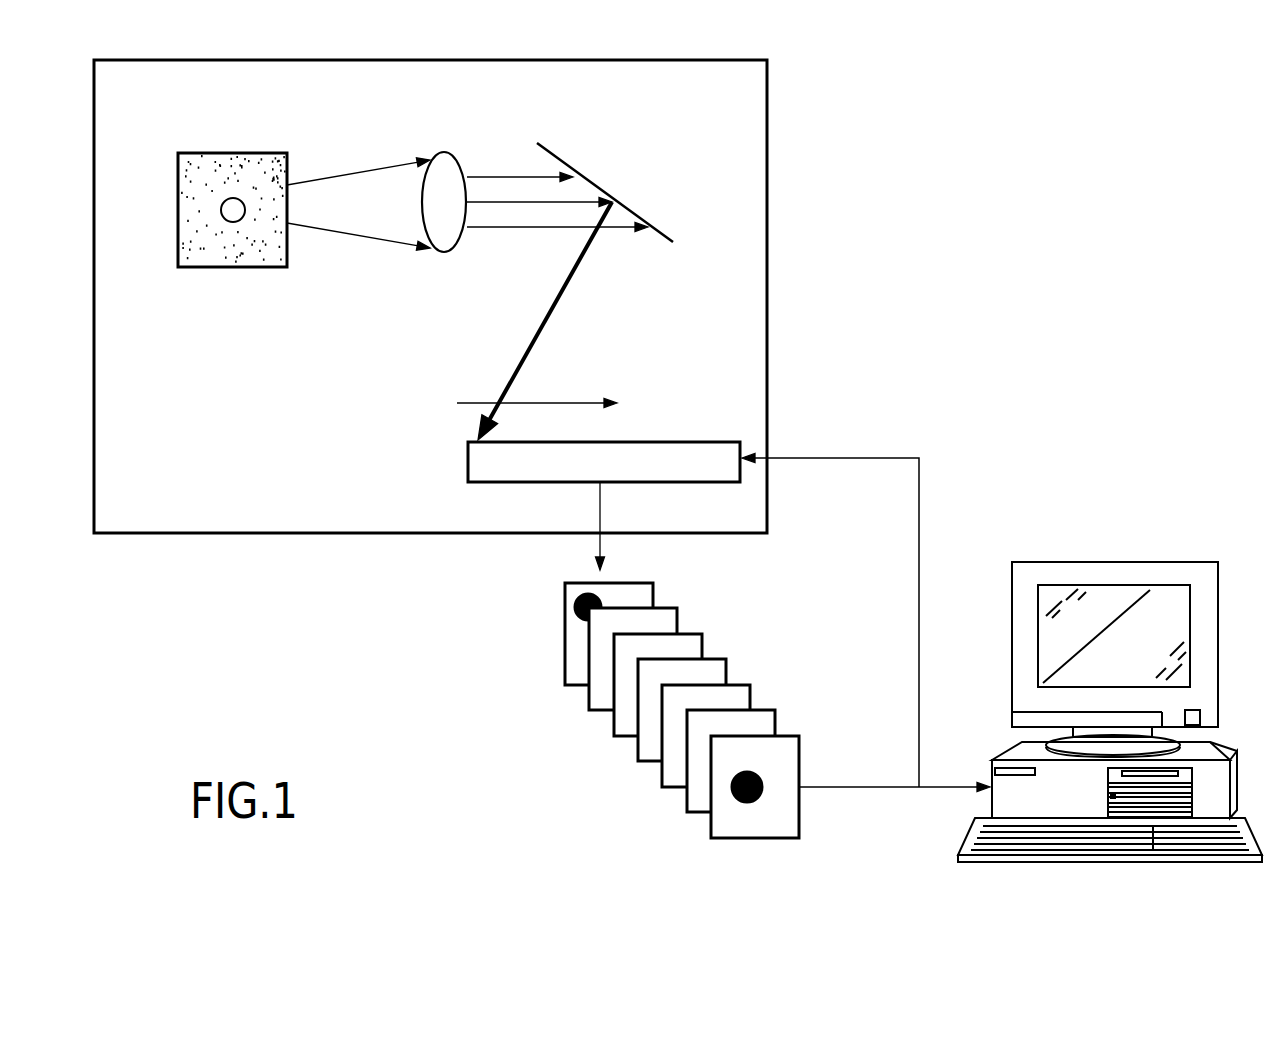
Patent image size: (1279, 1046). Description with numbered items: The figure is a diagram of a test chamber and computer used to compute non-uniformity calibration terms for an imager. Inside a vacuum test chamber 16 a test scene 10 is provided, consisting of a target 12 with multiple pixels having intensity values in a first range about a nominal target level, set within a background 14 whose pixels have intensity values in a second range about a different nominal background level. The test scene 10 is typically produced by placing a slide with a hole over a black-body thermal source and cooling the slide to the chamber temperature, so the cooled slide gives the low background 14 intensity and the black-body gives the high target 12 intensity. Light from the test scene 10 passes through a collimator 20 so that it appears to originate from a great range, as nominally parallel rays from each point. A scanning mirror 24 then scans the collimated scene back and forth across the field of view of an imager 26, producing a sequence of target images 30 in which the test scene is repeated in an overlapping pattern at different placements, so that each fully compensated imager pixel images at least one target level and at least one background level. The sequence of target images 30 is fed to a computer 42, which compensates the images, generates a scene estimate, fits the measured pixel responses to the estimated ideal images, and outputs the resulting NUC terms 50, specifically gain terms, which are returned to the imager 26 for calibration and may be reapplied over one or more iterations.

The test scene 10 is at (205, 143).
The target 12 is at (222, 213).
The background 14 is at (250, 248).
The vacuum test chamber 16 is at (767, 147).
The collimator 20 is at (450, 155).
The scanning mirror 24 is at (588, 178).
The imager 26 is at (468, 462).
The target images 30 is at (586, 766).
The computer 42 is at (1218, 655).
The NUC terms 50 is at (833, 594).